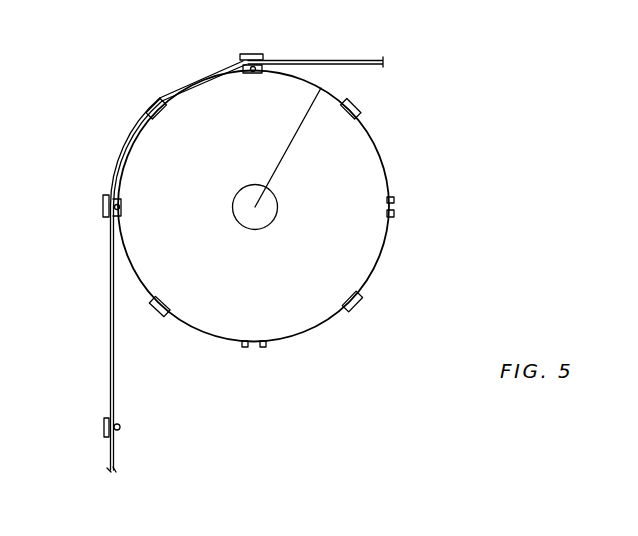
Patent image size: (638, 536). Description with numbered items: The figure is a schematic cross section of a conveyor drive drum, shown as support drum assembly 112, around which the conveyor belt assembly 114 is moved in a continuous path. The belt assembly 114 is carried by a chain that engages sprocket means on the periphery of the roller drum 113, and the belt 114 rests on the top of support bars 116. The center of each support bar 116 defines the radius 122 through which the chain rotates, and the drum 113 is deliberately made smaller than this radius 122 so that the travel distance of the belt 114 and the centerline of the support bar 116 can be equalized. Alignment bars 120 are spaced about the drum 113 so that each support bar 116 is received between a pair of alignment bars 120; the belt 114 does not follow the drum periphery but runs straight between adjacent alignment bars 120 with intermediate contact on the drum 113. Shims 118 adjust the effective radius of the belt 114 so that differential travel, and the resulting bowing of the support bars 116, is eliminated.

The support drum assembly 112 is at (432, 213).
The roller drum 113 is at (365, 162).
The conveyor belt assembly 114 is at (372, 59).
The support bar 116 is at (252, 54).
The shims 118 is at (158, 100).
The alignment bars 120 is at (265, 66).
The radius 122 is at (290, 148).